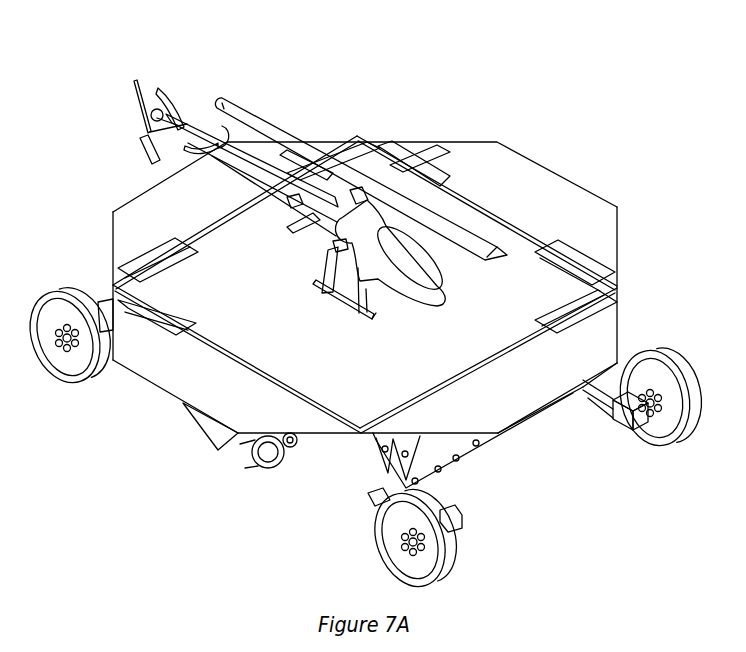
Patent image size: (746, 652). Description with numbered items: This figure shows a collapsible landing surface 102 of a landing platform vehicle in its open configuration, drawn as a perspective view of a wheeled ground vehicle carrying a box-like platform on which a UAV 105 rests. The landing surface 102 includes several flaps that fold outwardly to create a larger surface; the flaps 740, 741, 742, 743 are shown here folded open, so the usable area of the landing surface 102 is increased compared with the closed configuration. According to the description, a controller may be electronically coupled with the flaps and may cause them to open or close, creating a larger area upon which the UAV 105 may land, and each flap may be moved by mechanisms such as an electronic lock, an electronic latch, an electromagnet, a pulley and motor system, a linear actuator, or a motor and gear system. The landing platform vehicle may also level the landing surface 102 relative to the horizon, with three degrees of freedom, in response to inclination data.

The UAV 105 is at (465, 90).
The landing surface 102 is at (307, 346).
The frame enclosure 740 is at (180, 369).
The wheel assembly 741 is at (573, 364).
The right mounting brackets 742 is at (590, 222).
The left mounting brackets 743 is at (131, 235).